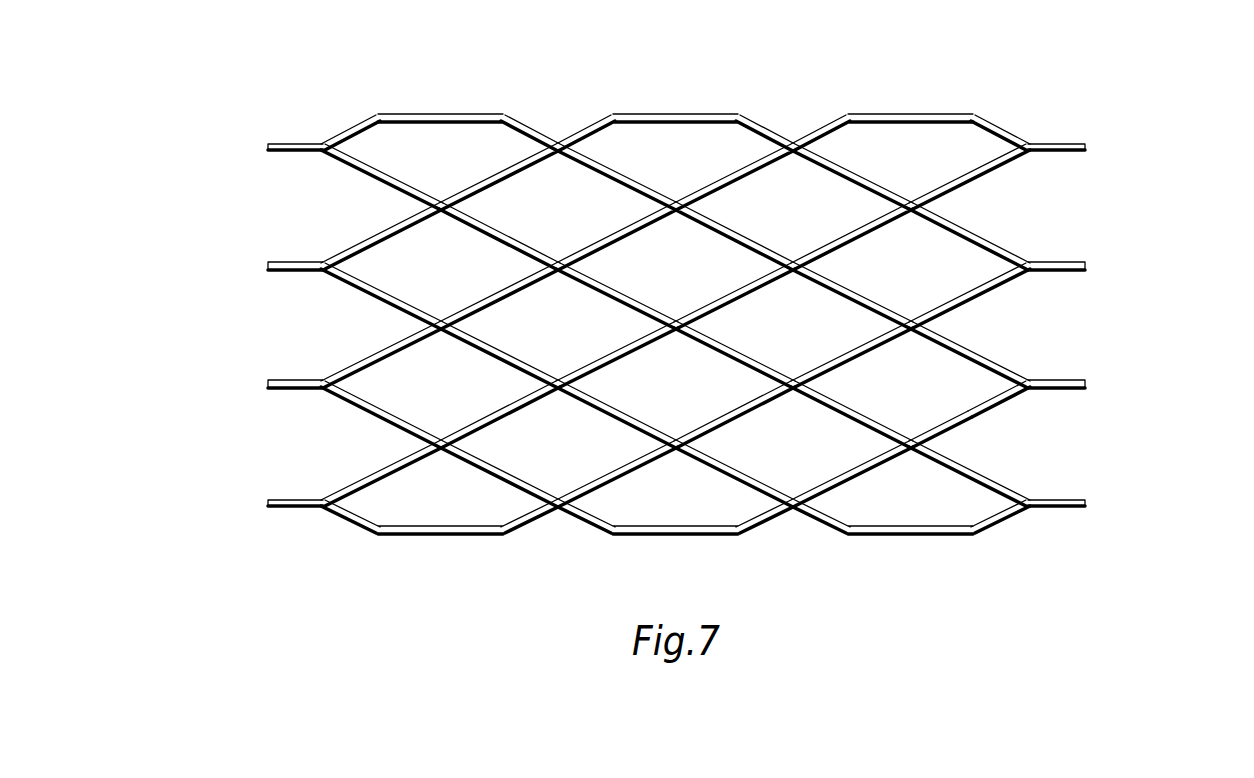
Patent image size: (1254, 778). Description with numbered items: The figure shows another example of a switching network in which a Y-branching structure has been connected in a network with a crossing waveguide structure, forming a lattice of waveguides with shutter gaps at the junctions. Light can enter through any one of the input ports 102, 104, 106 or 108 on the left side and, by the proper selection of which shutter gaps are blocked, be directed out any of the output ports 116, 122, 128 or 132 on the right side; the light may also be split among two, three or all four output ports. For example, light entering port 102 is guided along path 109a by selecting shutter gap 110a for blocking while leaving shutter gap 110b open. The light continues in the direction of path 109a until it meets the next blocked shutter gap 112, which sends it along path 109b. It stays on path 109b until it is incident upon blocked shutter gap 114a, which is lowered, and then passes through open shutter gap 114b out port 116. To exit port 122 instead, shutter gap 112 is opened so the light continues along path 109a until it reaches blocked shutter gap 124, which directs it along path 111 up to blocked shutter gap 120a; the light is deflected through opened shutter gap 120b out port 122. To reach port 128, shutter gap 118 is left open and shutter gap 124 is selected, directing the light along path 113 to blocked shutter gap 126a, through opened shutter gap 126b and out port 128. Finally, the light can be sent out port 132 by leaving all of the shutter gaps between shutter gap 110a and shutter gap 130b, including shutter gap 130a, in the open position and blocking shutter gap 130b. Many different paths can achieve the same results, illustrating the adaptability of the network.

The port 102 is at (265, 145).
The port 104 is at (265, 266).
The port 106 is at (260, 383).
The port 108 is at (258, 494).
The path 109a is at (412, 187).
The path 109b is at (748, 277).
The shutter gap 110a is at (323, 145).
The shutter gap 110b is at (323, 152).
The path 111 is at (888, 337).
The shutter gap 112 is at (675, 318).
The path 113 is at (960, 418).
The shutter gap 114a is at (1028, 143).
The shutter gap 114b is at (1028, 152).
The port 116 is at (1084, 142).
The shutter gap 118 is at (793, 386).
The shutter gap 120a is at (1030, 262).
The shutter gap 120b is at (1028, 270).
The port 122 is at (1093, 270).
The shutter gap 124 is at (913, 437).
The shutter gap 126a is at (1030, 378).
The shutter gap 126b is at (1028, 388).
The port 128 is at (1093, 378).
The shutter gap 130a is at (1030, 493).
The shutter gap 130b is at (1028, 507).
The port 132 is at (1093, 503).